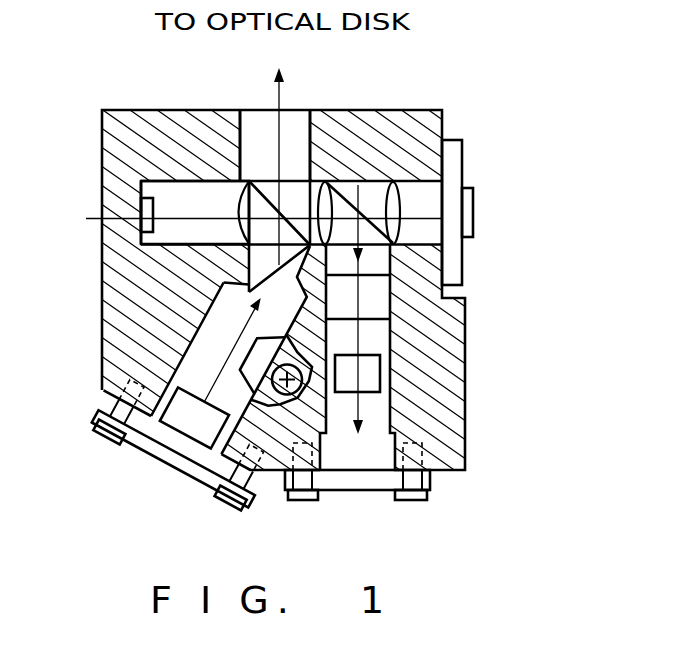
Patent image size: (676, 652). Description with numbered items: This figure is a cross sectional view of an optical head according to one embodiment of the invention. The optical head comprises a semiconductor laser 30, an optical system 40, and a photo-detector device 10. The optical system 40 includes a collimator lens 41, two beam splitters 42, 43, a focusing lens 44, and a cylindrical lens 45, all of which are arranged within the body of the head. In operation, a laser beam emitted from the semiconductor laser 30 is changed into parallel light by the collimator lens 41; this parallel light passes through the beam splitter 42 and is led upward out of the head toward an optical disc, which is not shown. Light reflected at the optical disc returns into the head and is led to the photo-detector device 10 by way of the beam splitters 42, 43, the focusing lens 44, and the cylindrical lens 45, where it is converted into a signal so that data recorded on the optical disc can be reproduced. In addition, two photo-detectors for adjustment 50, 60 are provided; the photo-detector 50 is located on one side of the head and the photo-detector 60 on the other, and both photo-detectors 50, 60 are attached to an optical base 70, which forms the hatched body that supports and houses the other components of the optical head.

The photo-detector device 10 is at (369, 490).
The semiconductor laser 30 is at (170, 455).
The optical system 40 is at (258, 135).
The collimator lens 41 is at (212, 345).
The beam splitter 42 is at (247, 216).
The beam splitter 43 is at (368, 180).
The focusing lens 44 is at (383, 298).
The cylindrical lens 45 is at (376, 374).
The photo-detector for adjustment 50 is at (462, 150).
The photo-detector for adjustment 60 is at (146, 206).
The optical base 70 is at (467, 438).